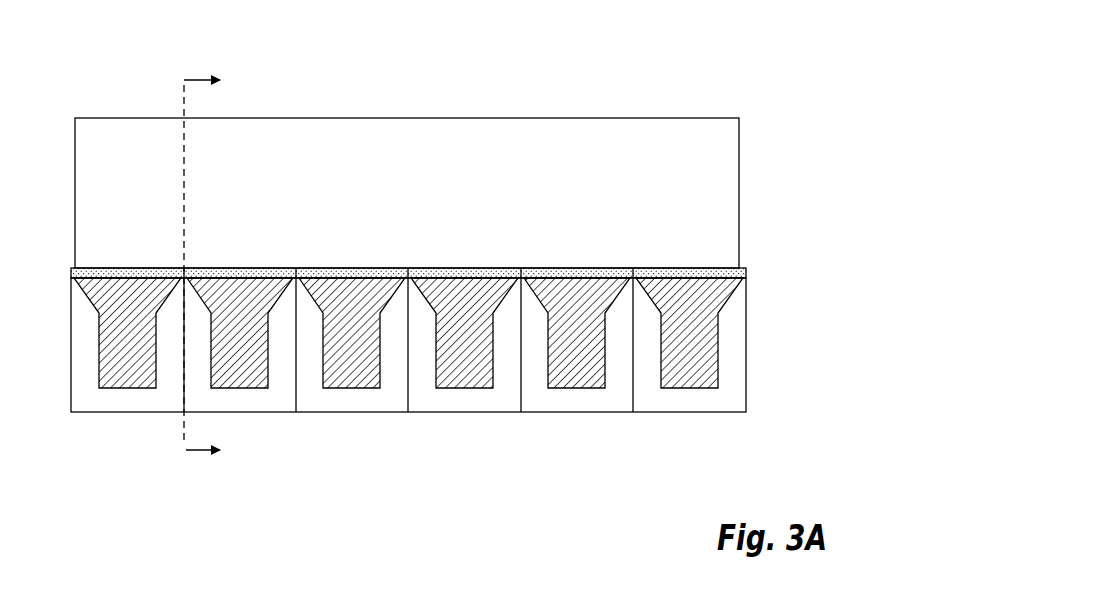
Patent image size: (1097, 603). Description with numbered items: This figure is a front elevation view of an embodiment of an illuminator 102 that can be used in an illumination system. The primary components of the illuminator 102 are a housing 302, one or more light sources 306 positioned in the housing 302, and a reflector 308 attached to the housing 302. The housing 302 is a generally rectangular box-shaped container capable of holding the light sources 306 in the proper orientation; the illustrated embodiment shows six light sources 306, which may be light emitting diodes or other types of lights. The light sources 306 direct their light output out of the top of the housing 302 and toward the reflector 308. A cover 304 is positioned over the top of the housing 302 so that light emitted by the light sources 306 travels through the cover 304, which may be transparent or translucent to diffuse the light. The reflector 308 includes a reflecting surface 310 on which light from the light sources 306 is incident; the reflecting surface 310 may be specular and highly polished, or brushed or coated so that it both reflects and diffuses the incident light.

The illuminator 102 is at (420, 245).
The housing 302 is at (508, 412).
The cover 304 is at (747, 272).
The light sources 306 is at (672, 380).
The reflector 308 is at (447, 117).
The reflecting surface 310 is at (97, 210).